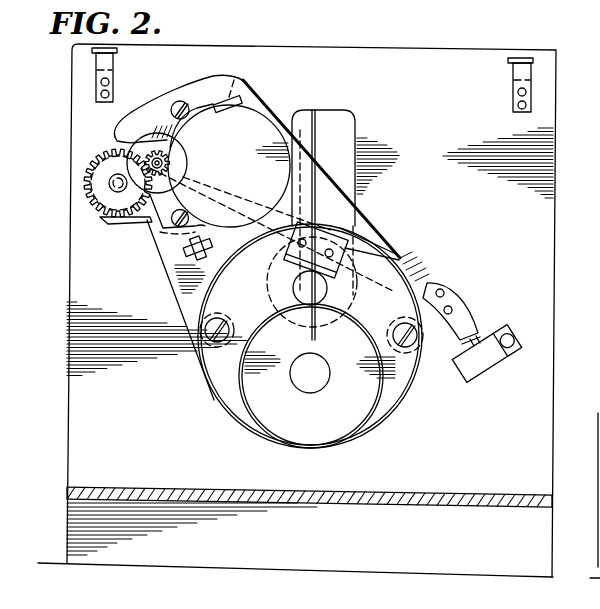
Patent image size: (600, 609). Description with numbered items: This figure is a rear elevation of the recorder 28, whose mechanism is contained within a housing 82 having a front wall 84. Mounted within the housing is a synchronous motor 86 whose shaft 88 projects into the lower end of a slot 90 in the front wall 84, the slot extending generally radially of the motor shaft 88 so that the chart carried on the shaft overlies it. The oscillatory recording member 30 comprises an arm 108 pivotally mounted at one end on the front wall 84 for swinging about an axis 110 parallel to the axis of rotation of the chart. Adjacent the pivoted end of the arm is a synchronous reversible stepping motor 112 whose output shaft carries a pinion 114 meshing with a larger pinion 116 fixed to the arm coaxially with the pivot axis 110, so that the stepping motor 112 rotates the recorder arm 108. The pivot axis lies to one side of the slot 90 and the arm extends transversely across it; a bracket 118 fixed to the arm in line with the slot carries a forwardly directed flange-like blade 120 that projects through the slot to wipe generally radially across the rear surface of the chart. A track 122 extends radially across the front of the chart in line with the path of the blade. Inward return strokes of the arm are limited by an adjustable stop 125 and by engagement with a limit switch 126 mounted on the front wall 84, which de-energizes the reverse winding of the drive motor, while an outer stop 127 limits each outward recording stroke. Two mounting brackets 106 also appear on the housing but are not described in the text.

The recorder 28 is at (496, 49).
The oscillatory recording member 30 is at (455, 286).
The housing 82 is at (588, 325).
The front wall 84 is at (520, 480).
The synchronous motor 86 is at (366, 391).
The motor shaft 88 is at (325, 302).
The slot 90 is at (353, 188).
The mounting bracket 106 is at (100, 68).
The recorder arm 108 is at (427, 265).
The pivot axis 110 is at (118, 183).
The synchronous reversible stepping motor 112 is at (283, 192).
The pinion 114 is at (168, 170).
The larger pinion 116 is at (110, 224).
The bracket 118 is at (365, 230).
The flange-like blade 120 is at (272, 276).
The track 122 is at (314, 126).
The adjustable stop 125 is at (183, 246).
The limit switch 126 is at (476, 382).
The outer stop 127 is at (248, 80).